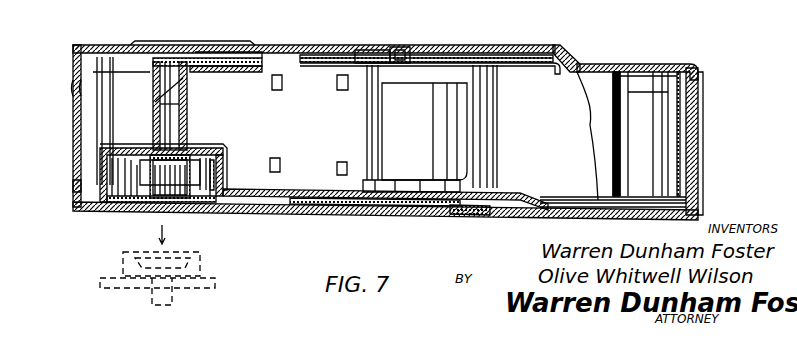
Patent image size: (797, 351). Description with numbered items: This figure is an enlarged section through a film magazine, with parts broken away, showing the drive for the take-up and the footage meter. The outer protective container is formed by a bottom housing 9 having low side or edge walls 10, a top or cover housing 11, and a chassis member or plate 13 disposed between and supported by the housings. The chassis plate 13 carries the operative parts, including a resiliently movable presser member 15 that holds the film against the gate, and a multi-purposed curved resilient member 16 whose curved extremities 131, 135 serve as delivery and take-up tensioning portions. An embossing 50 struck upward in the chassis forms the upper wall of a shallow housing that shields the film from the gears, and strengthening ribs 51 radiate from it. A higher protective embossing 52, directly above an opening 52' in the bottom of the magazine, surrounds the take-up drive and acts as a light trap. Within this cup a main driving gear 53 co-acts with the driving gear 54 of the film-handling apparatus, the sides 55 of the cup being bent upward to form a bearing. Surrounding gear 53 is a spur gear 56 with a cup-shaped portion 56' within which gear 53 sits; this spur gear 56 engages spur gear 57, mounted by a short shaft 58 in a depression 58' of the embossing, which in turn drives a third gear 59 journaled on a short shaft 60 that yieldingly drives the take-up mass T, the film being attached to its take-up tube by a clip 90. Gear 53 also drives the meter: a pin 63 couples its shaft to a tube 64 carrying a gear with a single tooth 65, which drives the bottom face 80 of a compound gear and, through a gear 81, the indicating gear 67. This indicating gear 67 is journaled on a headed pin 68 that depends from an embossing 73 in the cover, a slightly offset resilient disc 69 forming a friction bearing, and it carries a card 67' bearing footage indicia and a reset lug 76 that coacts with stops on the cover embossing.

The bottom housing 9 is at (405, 207).
The low side or edge walls 10 is at (700, 213).
The top or cover housing 11 is at (672, 66).
The chassis member or plate 13 is at (566, 209).
The presser member 15 is at (698, 170).
The curved resilient member 16 is at (594, 136).
The embossing 50 is at (518, 195).
The strengthening ribs 51 is at (582, 200).
The protective embossing 52 is at (190, 153).
The opening 52' is at (164, 202).
The main driving gear 53 is at (170, 200).
The driving gear 54 is at (163, 278).
The upwardly bent sides 55 is at (185, 145).
The spur gear 56 is at (155, 194).
The cup-shaped or bell-shaped portion 56' is at (248, 164).
The spur gear 57 is at (270, 207).
The short shaft 58 is at (375, 220).
The depression 58' is at (308, 172).
The third gear 59 is at (495, 208).
The short shaft 60 is at (415, 190).
The pin 63 is at (196, 110).
The tube 64 is at (183, 78).
The single tooth gear 65 is at (173, 62).
The indicating gear 67 is at (426, 34).
The card 67' is at (426, 33).
The headed pin 68 is at (402, 47).
The resilient disc 69 is at (372, 50).
The embossing 73 is at (562, 52).
The reset lug 76 is at (540, 52).
The bottom face 80 is at (232, 67).
The gear 81 is at (232, 50).
The clip 90 is at (417, 122).
The curved extremity 131 is at (647, 114).
The curved extremity 135 is at (122, 113).
The take-up mass T is at (493, 133).
The film f is at (735, 133).